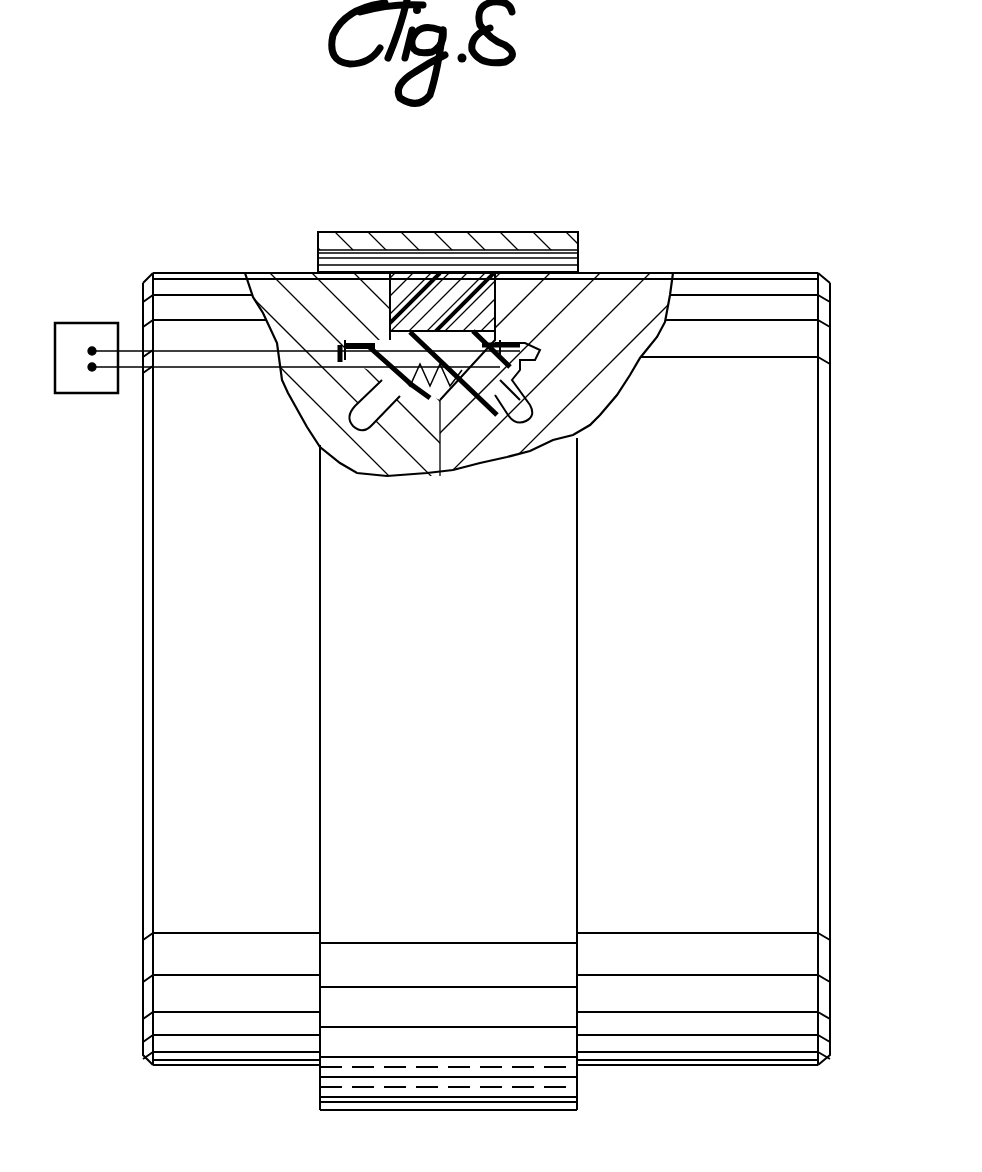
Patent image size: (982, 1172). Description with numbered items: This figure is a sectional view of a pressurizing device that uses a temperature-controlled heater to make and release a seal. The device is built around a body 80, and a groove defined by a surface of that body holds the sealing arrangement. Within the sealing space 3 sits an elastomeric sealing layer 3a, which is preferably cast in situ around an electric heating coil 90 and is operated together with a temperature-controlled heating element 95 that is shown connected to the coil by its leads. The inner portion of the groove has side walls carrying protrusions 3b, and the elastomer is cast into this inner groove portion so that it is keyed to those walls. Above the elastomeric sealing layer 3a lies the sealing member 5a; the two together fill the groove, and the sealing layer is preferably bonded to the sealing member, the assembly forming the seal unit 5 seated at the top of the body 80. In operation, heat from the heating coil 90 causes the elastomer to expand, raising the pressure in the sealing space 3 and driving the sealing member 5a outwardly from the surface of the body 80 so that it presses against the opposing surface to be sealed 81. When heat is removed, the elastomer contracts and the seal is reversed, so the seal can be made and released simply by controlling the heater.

The sealing space 3 is at (655, 340).
The elastomeric sealing layer 3a is at (530, 325).
The protrusions 3b is at (525, 370).
The plug insert 5 is at (340, 263).
The sealing member 5a is at (447, 296).
The body 80 is at (773, 427).
The opposing surface to be sealed 81 is at (457, 238).
The electric heating coil 90 is at (410, 412).
The temperature-controlled heating element 95 is at (88, 326).